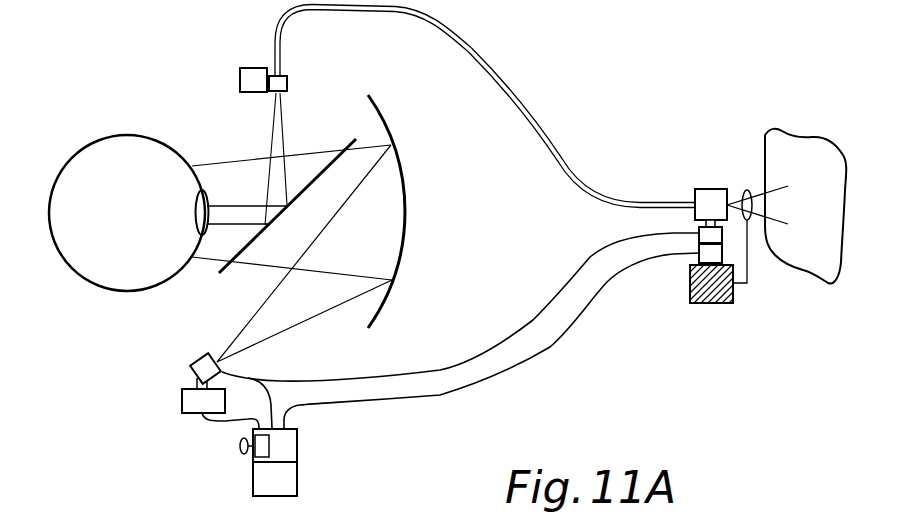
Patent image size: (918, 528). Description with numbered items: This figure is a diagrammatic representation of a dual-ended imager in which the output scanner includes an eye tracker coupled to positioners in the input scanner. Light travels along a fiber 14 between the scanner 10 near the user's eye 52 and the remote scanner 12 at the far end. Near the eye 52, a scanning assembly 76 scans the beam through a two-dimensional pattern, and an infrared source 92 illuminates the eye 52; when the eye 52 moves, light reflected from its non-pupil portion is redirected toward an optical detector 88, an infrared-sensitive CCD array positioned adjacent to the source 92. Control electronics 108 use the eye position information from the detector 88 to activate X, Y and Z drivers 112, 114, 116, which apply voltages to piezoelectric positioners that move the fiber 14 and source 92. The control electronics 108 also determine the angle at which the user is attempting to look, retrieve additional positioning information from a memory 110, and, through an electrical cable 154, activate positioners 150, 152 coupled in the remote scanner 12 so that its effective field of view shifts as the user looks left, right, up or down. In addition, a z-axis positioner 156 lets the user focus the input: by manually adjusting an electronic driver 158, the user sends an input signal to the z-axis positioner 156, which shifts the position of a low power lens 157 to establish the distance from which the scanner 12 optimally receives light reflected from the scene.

The scanner 10 is at (287, 84).
The remote scanner 12 is at (707, 189).
The fiber 14 is at (535, 103).
The eye 52 is at (87, 145).
The scanning assembly 76 is at (135, 357).
The optical detector 88 is at (135, 357).
The infrared source 92 is at (195, 360).
The control electronics 108 is at (297, 440).
The memory 110 is at (297, 478).
The X driver 112 is at (144, 418).
The Y driver 114 is at (144, 418).
The Z driver 116 is at (182, 400).
The positioner 150 is at (722, 236).
The positioner 152 is at (722, 254).
The electrical cable 154 is at (572, 332).
The z-axis positioner 156 is at (707, 303).
The low power lens 157 is at (747, 190).
The electronic driver 158 is at (258, 455).